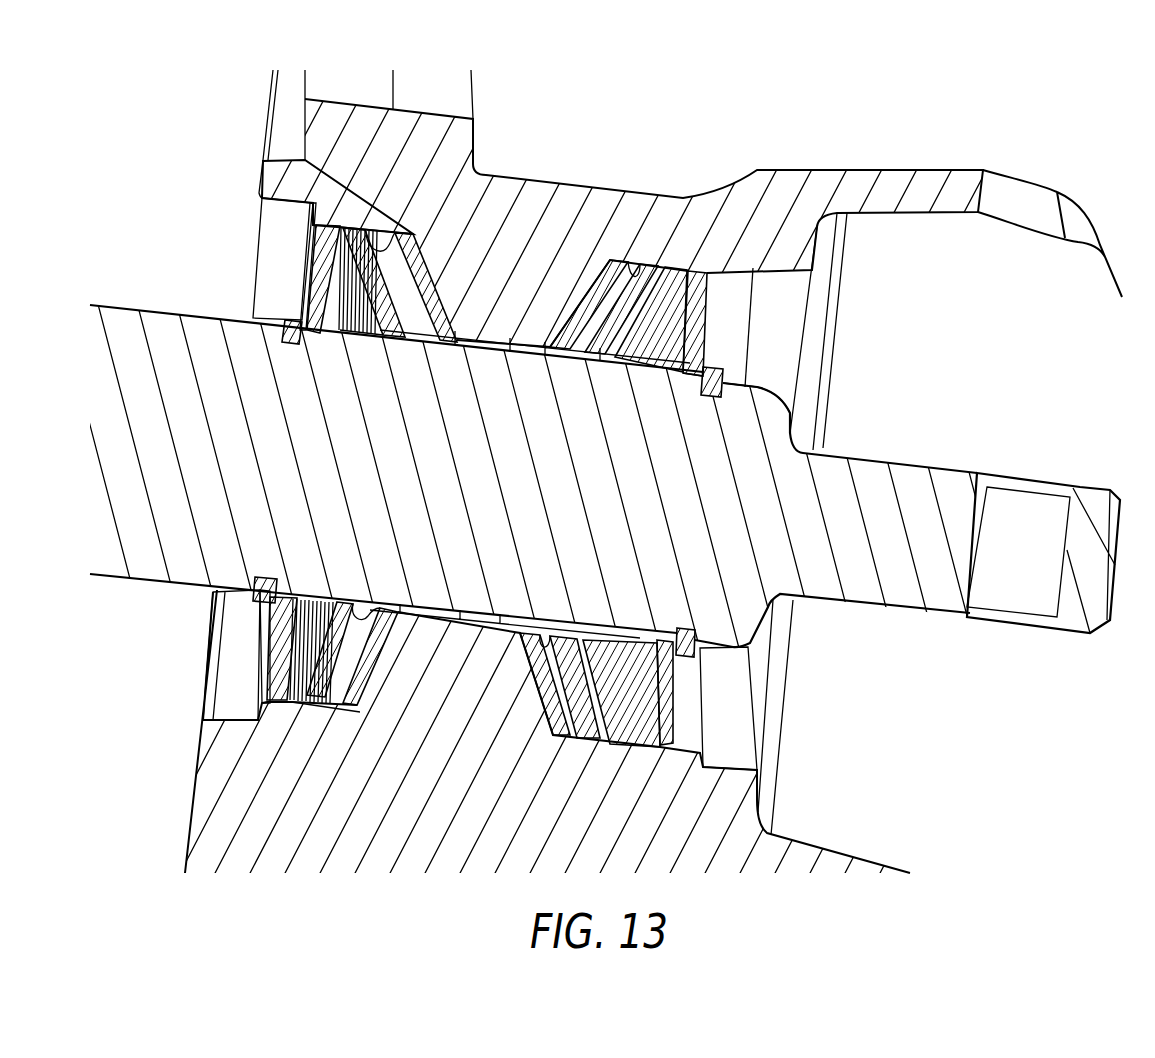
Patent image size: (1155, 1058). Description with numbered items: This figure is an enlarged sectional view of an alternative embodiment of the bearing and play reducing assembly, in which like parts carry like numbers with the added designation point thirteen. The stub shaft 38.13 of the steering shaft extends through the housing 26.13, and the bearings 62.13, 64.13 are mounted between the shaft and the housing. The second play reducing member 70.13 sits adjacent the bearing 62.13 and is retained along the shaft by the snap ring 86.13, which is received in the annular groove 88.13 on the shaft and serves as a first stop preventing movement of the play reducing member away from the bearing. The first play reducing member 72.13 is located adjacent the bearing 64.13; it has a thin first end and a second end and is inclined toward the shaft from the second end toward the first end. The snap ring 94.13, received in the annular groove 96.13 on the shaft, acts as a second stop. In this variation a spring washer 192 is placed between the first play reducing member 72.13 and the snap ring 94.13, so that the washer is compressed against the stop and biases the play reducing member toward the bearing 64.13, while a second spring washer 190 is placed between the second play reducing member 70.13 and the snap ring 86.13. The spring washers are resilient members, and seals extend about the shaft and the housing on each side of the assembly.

The housing 26.13 is at (340, 795).
The stub shaft 38.13 is at (463, 568).
The bearing 62.13 is at (381, 220).
The bearing 64.13 is at (643, 250).
The second play reducing member 70.13 is at (336, 225).
The first play reducing member 72.13 is at (686, 271).
The snap ring 86.13 is at (310, 343).
The annular groove 88.13 is at (287, 350).
The snap ring 94.13 is at (727, 392).
The annular groove 96.13 is at (713, 398).
The second spring washer 190 is at (313, 297).
The spring washer 192 is at (697, 380).